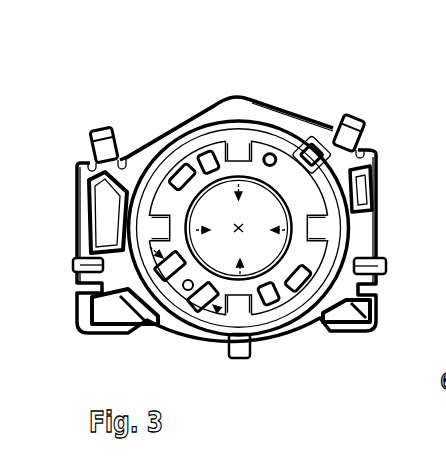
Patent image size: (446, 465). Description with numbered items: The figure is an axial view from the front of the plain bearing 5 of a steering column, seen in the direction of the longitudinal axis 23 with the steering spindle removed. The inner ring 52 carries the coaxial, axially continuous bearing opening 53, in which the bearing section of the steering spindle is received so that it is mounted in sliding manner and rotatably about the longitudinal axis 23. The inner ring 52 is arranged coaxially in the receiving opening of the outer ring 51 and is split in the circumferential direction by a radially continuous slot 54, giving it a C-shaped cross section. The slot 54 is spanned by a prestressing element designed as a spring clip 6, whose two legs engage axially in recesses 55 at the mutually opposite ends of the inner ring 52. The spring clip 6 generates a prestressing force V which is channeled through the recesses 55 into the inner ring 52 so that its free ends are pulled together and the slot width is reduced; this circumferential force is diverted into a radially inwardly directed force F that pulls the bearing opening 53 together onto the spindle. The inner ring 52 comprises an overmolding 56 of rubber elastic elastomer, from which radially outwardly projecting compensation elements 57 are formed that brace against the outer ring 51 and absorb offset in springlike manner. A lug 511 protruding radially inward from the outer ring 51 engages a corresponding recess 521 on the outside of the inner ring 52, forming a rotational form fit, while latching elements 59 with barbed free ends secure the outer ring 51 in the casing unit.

The plain bearing 5 is at (161, 96).
The outer ring 51 is at (140, 143).
The inner ring 52 is at (207, 142).
The bearing opening 53 is at (276, 201).
The slot 54 is at (146, 327).
The recesses 55 is at (102, 300).
The overmolding 56 is at (246, 149).
The compensation elements 57 is at (246, 121).
The latching elements 59 is at (100, 128).
The lug 511 is at (336, 146).
The recess 521 is at (302, 162).
The longitudinal axis 23 is at (236, 226).
The spring clip 6 is at (177, 288).
The prestressing force V is at (88, 260).
The radial force F is at (301, 378).